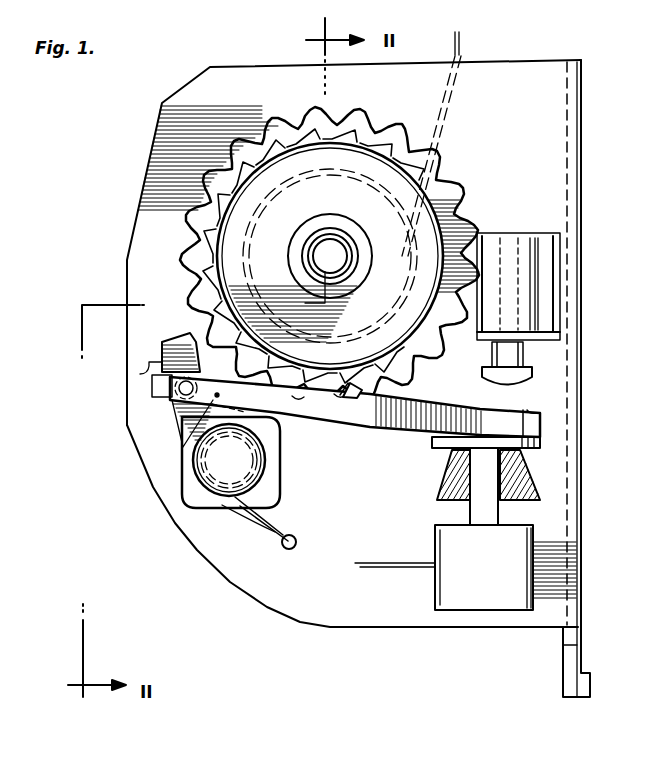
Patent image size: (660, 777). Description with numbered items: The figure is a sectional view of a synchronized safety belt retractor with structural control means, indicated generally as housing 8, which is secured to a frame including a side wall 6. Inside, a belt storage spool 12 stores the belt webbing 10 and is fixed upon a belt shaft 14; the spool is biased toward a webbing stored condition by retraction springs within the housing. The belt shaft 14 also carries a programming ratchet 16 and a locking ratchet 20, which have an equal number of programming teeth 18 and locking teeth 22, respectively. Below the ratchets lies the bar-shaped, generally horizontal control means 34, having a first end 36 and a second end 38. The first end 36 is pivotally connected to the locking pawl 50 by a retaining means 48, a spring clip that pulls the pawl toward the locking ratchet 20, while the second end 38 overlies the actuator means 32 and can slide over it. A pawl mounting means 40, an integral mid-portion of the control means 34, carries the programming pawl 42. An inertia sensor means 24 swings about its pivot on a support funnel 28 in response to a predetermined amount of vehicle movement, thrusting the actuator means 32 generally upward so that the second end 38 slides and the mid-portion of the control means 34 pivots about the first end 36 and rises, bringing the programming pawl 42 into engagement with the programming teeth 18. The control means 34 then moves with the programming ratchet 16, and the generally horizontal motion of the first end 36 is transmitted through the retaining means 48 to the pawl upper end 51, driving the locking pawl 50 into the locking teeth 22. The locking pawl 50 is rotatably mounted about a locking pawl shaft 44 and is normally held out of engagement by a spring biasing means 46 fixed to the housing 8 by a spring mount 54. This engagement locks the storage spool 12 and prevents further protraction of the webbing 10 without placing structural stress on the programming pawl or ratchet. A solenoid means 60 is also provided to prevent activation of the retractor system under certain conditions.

The side wall 6 is at (579, 102).
The housing 8 is at (122, 181).
The belt webbing 10 is at (458, 46).
The belt storage spool 12 is at (300, 233).
The belt shaft 14 is at (340, 256).
The programming ratchet 16 is at (257, 160).
The programming teeth 18 is at (200, 260).
The locking ratchet 20 is at (203, 177).
The locking teeth 22 is at (273, 120).
The inertia sensor means 24 is at (548, 511).
The support funnel 28 is at (543, 482).
The actuator means 32 is at (542, 443).
The control means 34 is at (297, 442).
The first end 36 is at (207, 398).
The second end 38 is at (528, 412).
The pawl mounting means 40 is at (357, 394).
The programming pawl 42 is at (348, 395).
The locking pawl shaft 44 is at (213, 485).
The spring biasing means 46 is at (267, 532).
The retaining means 48 is at (152, 396).
The locking pawl 50 is at (172, 347).
The pawl upper end 51 is at (140, 374).
The spring mount 54 is at (292, 550).
The solenoid means 60 is at (560, 258).